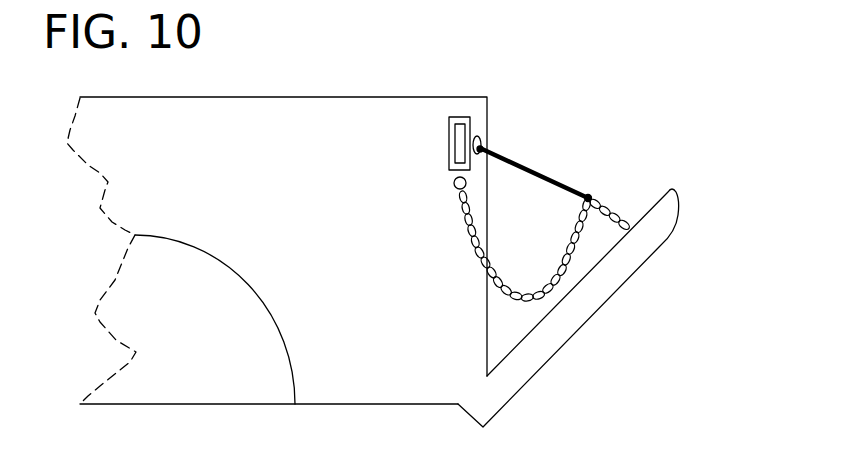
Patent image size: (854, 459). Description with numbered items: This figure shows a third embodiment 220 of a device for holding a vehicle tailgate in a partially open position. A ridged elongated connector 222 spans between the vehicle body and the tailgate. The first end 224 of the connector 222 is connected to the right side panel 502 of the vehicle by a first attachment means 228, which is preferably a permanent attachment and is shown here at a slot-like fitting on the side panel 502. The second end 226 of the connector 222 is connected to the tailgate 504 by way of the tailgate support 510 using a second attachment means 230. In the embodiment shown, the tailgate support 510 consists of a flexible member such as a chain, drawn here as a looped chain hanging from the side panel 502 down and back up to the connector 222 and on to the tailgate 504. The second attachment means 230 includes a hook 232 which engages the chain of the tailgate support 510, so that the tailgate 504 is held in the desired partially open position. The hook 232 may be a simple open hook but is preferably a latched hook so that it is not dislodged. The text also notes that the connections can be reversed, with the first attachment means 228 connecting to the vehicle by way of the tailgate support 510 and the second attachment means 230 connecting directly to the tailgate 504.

The right side panel 502 is at (273, 97).
The tailgate 504 is at (660, 246).
The tailgate support 510 is at (628, 226).
The third embodiment 220 is at (580, 165).
The ridged elongated connector 222 is at (522, 165).
The first end 224 is at (477, 156).
The second end 226 is at (584, 203).
The first attachment means 228 is at (492, 135).
The second attachment means 230 is at (588, 218).
The hook 232 is at (587, 196).